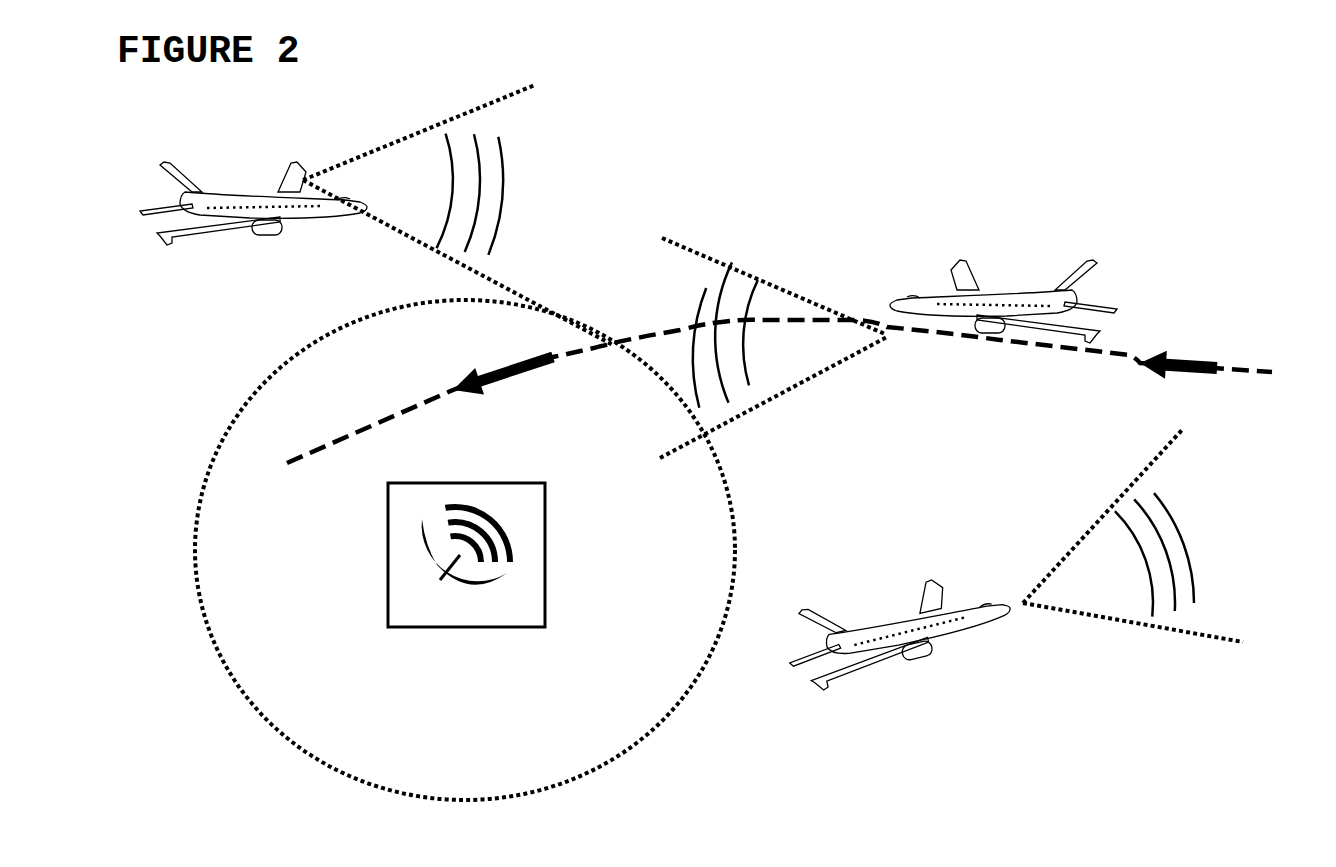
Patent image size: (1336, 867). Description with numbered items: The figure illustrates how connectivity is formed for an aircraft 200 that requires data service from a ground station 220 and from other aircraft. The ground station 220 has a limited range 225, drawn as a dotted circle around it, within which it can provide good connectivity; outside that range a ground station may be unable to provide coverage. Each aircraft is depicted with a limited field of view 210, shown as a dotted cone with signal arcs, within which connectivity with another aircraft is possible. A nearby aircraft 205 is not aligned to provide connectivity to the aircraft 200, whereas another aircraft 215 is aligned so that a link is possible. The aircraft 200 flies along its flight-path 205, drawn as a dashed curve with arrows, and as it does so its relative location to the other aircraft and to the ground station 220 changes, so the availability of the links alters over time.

The aircraft 200 is at (1003, 296).
The nearby aircraft / flight-path 205 is at (788, 515).
The field of view 210 is at (1126, 536).
The another aircraft 215 is at (253, 225).
The ground station 220 is at (466, 574).
The limited range 225 is at (465, 569).